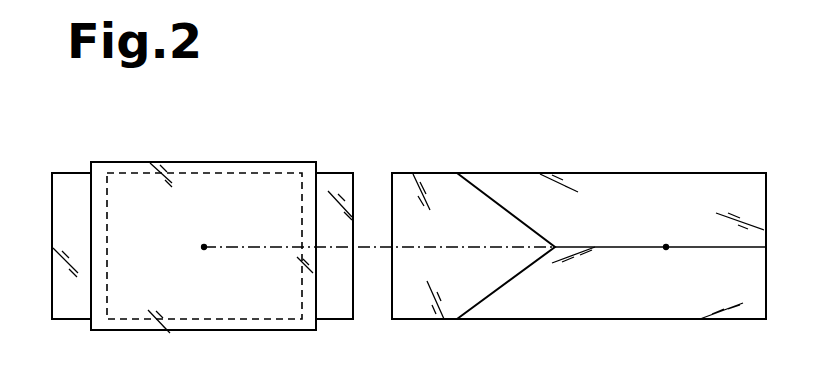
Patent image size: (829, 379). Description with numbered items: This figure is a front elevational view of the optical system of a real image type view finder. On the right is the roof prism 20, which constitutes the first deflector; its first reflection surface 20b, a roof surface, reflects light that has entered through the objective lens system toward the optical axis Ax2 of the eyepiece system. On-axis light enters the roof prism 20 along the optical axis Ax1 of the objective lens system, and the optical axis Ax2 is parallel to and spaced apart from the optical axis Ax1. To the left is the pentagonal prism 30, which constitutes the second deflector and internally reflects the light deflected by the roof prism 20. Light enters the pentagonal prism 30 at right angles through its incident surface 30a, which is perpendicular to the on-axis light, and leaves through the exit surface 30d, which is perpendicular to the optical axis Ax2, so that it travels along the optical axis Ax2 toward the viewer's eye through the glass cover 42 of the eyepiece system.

The roof prism 20 is at (672, 173).
The first reflection surface 20b is at (585, 188).
The pentagonal prism 30 is at (67, 173).
The incident surface 30a is at (337, 305).
The exit surface 30d is at (307, 264).
The glass cover 42 is at (255, 132).
The optical axis of the objective lens system Ax1 is at (666, 249).
The optical axis of the eyepiece system Ax2 is at (204, 249).